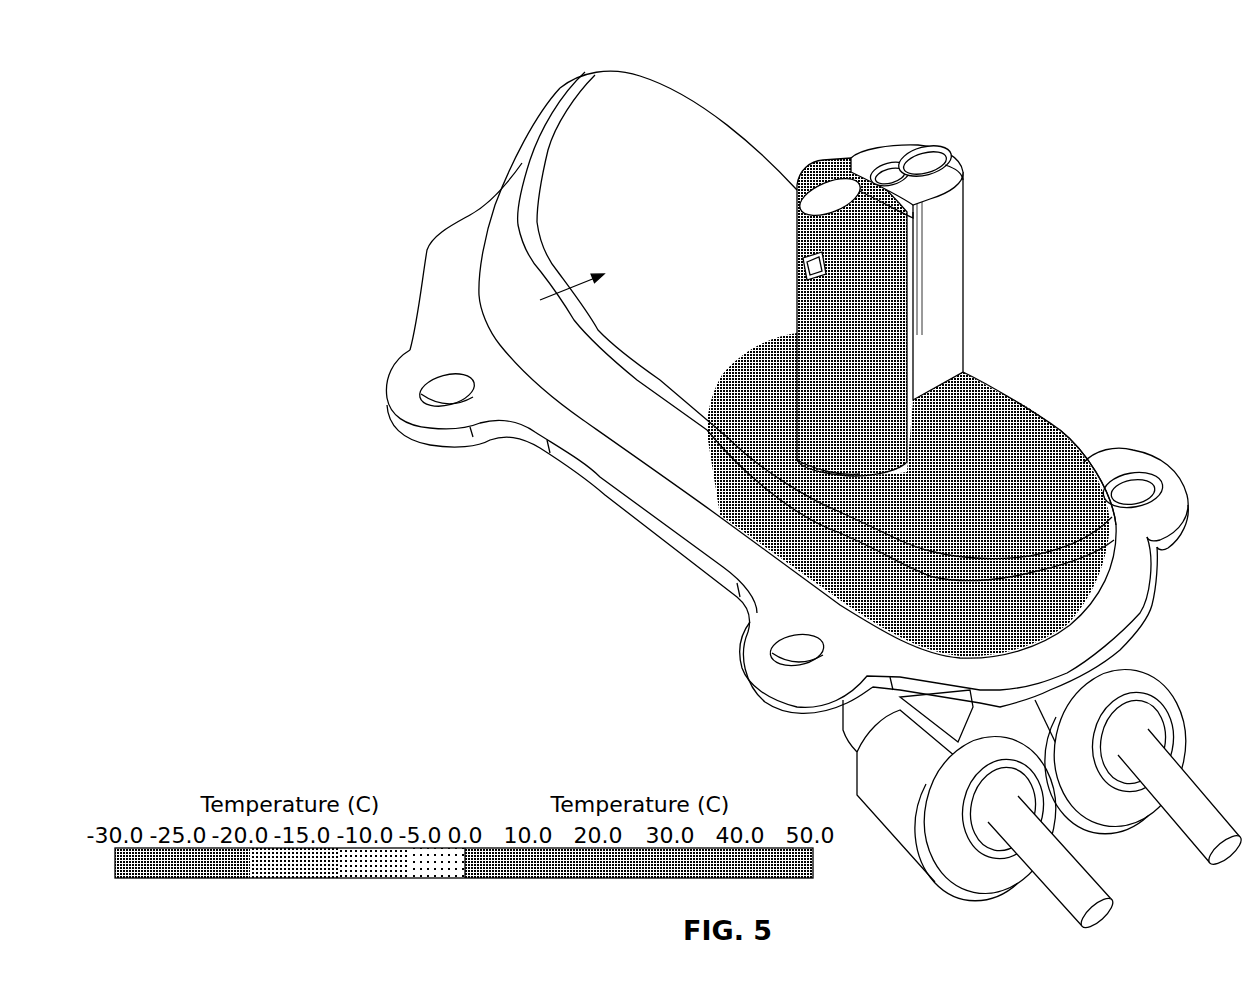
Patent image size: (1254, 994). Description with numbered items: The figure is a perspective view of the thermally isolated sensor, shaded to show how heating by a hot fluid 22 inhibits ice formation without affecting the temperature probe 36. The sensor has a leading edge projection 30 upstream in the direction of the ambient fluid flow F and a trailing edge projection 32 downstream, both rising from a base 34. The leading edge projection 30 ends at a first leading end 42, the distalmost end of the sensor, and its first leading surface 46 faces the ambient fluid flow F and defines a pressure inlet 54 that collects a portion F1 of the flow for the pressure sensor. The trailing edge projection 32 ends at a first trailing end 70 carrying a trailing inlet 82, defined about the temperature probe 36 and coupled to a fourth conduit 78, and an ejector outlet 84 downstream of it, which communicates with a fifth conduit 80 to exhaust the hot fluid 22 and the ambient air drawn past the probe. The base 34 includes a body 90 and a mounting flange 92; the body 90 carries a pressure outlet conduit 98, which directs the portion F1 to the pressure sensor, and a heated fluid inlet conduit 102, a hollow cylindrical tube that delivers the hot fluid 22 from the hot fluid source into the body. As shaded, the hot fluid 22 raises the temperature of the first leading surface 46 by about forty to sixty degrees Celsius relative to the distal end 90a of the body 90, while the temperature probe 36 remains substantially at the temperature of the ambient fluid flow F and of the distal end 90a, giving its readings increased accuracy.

The distal end 90a is at (555, 93).
The leading edge projection 30 is at (788, 178).
The first leading end 42 is at (818, 168).
The trailing inlet 82 is at (873, 163).
The temperature probe 36 is at (888, 168).
The ejector outlet 84 is at (913, 148).
The first trailing end 70 is at (942, 150).
The fifth conduit 80 is at (945, 170).
The fourth conduit 78 is at (928, 188).
The trailing edge projection 32 is at (975, 288).
The body 90 is at (998, 383).
The base 34 is at (1102, 382).
The mounting flange 92 is at (1150, 445).
The pressure outlet conduit 98 is at (1182, 700).
The hot fluid 22 is at (1043, 877).
The heated fluid inlet conduit 102 is at (963, 877).
The pressure inlet 54 is at (807, 263).
The first leading surface 46 is at (842, 402).
The ambient fluid flow F is at (582, 283).
The portion of the ambient fluid flow F1 is at (1163, 810).